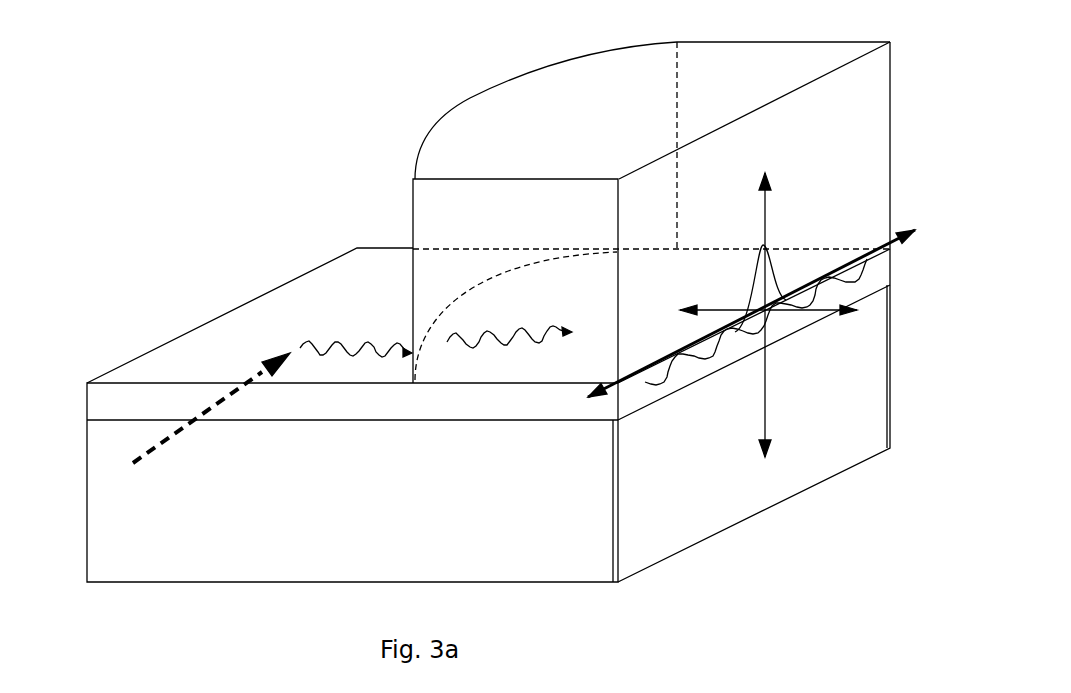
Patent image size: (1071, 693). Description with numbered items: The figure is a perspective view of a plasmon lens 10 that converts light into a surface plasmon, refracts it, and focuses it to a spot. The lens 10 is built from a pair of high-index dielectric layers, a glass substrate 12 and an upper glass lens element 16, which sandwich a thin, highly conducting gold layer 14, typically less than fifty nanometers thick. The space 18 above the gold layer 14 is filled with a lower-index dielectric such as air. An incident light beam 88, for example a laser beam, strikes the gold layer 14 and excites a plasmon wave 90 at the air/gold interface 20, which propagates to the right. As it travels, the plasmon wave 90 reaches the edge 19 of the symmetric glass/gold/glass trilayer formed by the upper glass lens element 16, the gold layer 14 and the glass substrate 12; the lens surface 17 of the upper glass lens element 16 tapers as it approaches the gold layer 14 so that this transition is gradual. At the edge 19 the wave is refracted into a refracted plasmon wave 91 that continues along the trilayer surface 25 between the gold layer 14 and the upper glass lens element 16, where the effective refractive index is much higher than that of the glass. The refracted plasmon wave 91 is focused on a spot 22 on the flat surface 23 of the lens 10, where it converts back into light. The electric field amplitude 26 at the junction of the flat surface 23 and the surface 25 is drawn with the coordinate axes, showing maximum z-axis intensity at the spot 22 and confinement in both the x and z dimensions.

The plasmon lens 10 is at (738, 555).
The glass substrate 12 is at (287, 550).
The gold layer 14 is at (705, 363).
The upper glass lens element 16 is at (440, 212).
The lens surface 17 is at (467, 99).
The space above the gold layer 18 is at (254, 205).
The edge of trilayer structure 19 is at (462, 307).
The air/gold interface 20 is at (298, 349).
The spot 22 is at (798, 258).
The flat surface 23 is at (835, 138).
The trilayer region surface 25 is at (655, 298).
The electric field amplitude 26 is at (775, 313).
The incident light beam 88 is at (183, 433).
The plasmon wave 90 is at (405, 350).
The refracted plasmon wave 91 is at (512, 330).